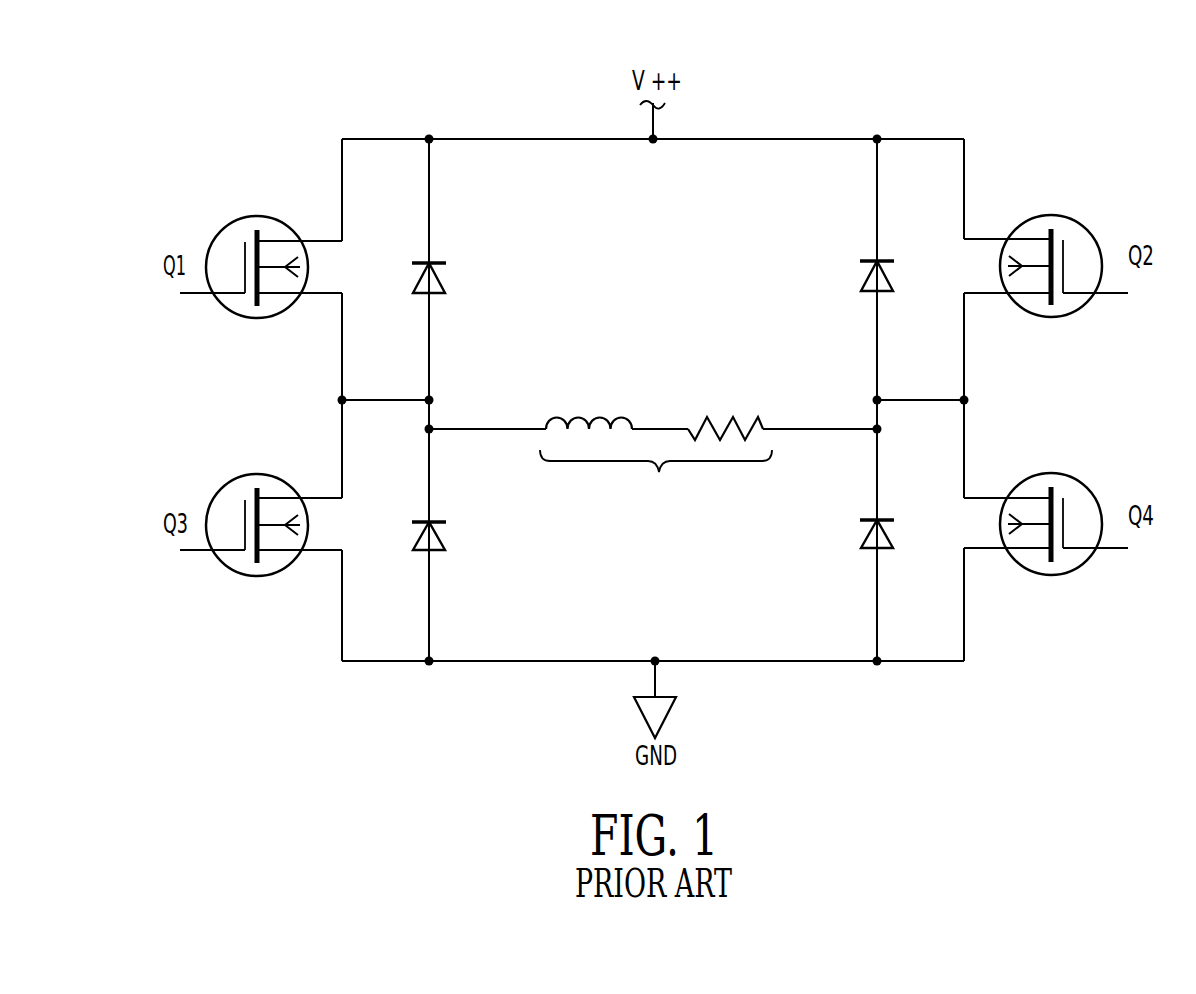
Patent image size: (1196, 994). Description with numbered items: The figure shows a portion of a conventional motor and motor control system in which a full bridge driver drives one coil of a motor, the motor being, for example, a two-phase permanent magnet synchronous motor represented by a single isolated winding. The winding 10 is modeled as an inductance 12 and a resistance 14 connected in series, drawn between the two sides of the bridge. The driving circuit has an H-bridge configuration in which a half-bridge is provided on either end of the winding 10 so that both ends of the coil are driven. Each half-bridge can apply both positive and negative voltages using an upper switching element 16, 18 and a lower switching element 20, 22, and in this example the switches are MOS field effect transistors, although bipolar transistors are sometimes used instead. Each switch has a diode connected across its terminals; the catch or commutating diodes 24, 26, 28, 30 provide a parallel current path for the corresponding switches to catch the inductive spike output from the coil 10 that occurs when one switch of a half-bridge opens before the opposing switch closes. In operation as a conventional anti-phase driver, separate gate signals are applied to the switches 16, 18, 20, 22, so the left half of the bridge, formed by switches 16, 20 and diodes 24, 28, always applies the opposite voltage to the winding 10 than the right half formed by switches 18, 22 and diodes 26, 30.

The winding 10 is at (656, 481).
The inductance 12 is at (571, 417).
The resistance 14 is at (738, 418).
The upper switching element 16 is at (222, 230).
The upper switching element 18 is at (1088, 229).
The lower switching element 20 is at (222, 487).
The lower switching element 22 is at (1088, 486).
The catch diode 24 is at (437, 262).
The catch diode 26 is at (870, 259).
The catch diode 28 is at (438, 521).
The catch diode 30 is at (870, 518).